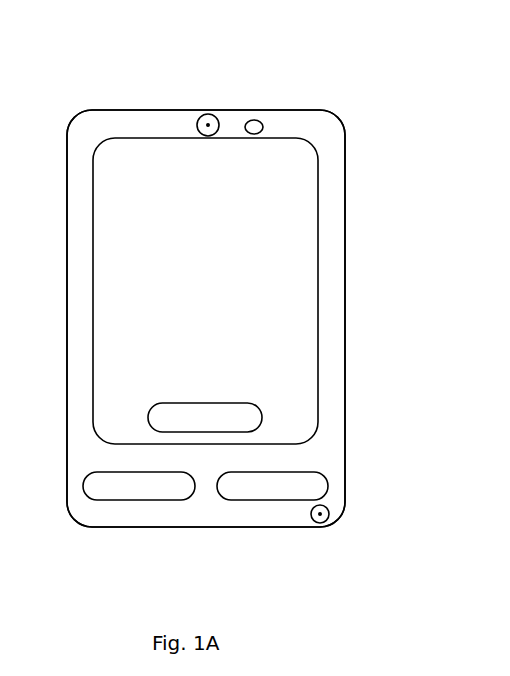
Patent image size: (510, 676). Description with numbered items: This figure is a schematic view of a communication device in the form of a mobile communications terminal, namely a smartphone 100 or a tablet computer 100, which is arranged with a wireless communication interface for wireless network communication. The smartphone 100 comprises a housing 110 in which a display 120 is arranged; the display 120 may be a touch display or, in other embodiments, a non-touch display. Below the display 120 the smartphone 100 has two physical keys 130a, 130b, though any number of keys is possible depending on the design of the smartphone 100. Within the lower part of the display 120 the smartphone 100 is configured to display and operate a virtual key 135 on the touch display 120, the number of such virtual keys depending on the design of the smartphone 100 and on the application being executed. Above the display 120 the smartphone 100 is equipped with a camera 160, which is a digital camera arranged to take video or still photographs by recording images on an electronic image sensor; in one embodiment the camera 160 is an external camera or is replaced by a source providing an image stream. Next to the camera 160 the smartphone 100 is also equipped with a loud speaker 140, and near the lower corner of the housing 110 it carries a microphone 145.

The smartphone 100 is at (93, 104).
The housing 110 is at (345, 223).
The display 120 is at (303, 293).
The key 130a is at (140, 500).
The key 130b is at (328, 488).
The virtual key 135 is at (262, 418).
The loud speaker 140 is at (254, 120).
The microphone 145 is at (326, 520).
The camera 160 is at (208, 114).